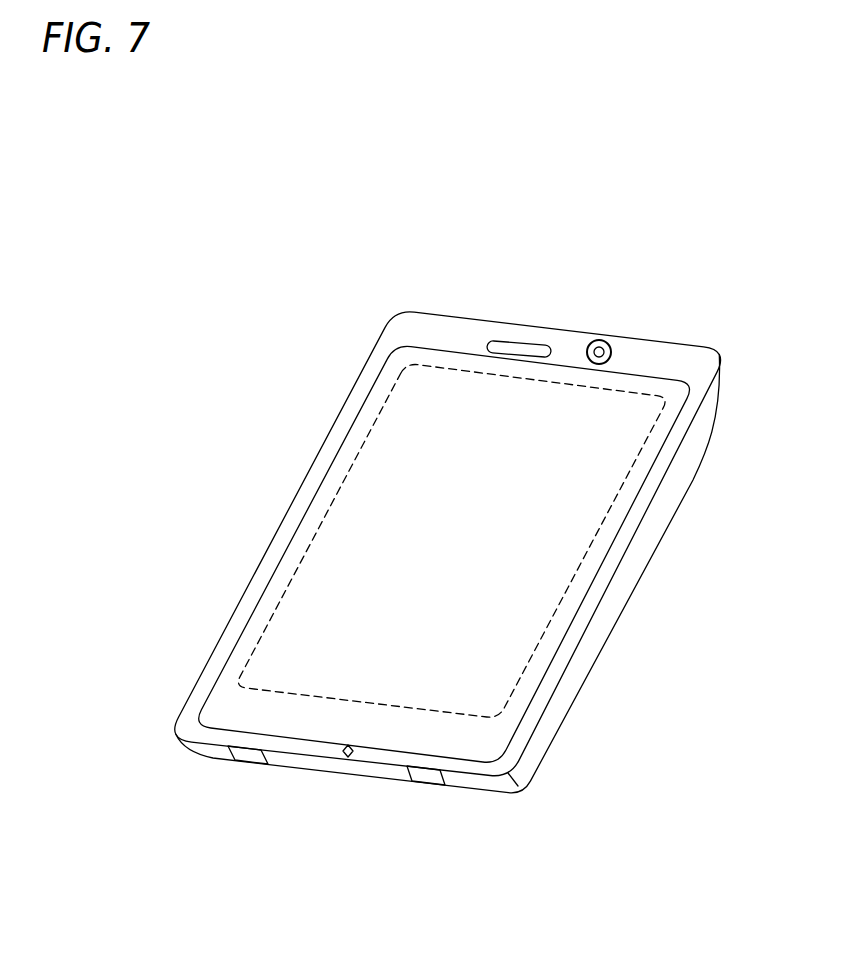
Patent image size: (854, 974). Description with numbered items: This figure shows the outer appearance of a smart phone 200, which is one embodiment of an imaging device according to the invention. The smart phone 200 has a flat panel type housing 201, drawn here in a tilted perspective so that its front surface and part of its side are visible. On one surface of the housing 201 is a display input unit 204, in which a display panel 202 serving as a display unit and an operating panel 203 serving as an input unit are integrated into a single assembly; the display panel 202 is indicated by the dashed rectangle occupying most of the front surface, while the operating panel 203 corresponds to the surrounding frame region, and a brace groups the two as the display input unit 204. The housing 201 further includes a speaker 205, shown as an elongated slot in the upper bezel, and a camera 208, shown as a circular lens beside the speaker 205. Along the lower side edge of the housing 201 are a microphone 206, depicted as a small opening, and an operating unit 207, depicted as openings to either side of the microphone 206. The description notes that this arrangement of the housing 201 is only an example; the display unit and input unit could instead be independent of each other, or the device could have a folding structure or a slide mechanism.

The smart phone 200 is at (266, 388).
The housing 201 is at (399, 326).
The display panel 202 is at (627, 392).
The operating panel 203 is at (670, 375).
The display input unit 204 is at (754, 266).
The speaker 205 is at (517, 341).
The microphone 206 is at (347, 758).
The operating unit 207 is at (246, 761).
The camera 208 is at (597, 340).